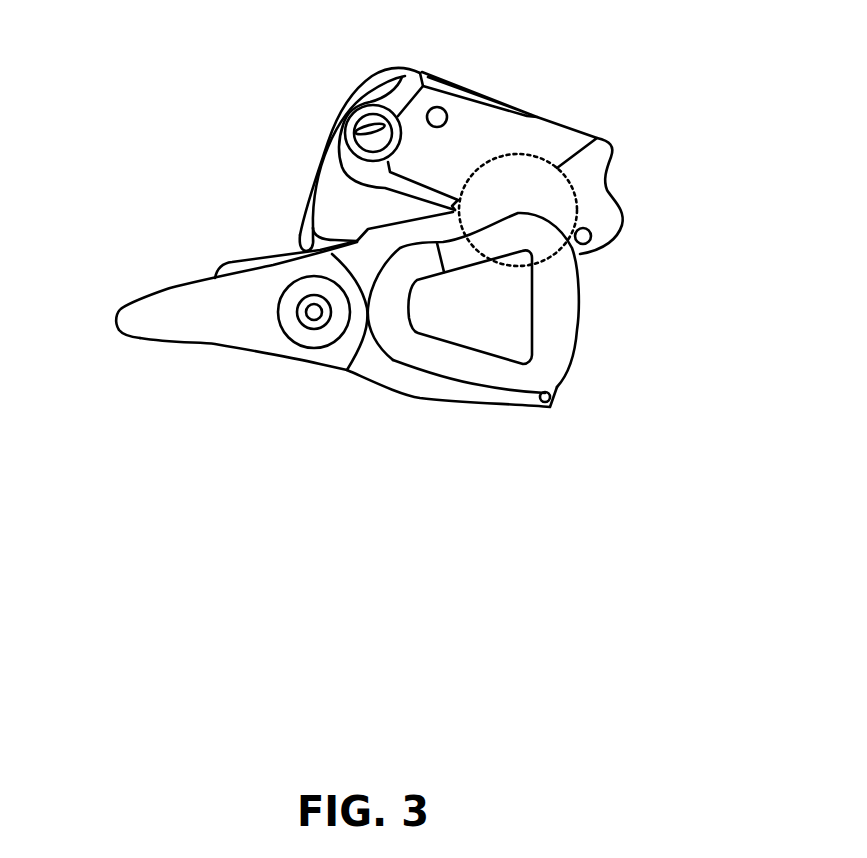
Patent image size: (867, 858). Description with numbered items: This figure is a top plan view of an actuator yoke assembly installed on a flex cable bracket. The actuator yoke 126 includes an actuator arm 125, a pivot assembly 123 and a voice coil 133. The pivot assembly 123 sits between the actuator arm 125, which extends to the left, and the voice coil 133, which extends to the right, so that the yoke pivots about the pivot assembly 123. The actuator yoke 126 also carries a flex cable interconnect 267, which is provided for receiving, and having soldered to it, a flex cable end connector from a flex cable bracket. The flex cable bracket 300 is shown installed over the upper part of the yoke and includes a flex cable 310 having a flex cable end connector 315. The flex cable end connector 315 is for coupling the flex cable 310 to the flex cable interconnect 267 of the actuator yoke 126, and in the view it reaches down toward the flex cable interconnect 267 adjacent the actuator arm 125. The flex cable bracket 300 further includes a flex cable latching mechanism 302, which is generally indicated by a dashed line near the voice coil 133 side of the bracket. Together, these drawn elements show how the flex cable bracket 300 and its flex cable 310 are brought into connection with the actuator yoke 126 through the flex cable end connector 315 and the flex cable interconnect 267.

The pivot assembly 123 is at (299, 346).
The actuator arm 125 is at (260, 316).
The actuator yoke 126 is at (130, 298).
The voice coil 133 is at (577, 327).
The flex cable interconnect 267 is at (270, 260).
The flex cable bracket 300 is at (465, 84).
The flex cable latching mechanism 302 is at (580, 247).
The flex cable 310 is at (318, 148).
The flex cable end connector 315 is at (300, 245).